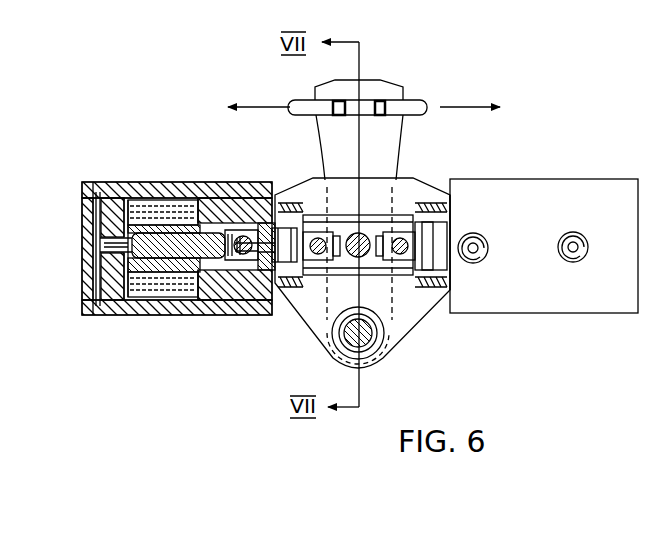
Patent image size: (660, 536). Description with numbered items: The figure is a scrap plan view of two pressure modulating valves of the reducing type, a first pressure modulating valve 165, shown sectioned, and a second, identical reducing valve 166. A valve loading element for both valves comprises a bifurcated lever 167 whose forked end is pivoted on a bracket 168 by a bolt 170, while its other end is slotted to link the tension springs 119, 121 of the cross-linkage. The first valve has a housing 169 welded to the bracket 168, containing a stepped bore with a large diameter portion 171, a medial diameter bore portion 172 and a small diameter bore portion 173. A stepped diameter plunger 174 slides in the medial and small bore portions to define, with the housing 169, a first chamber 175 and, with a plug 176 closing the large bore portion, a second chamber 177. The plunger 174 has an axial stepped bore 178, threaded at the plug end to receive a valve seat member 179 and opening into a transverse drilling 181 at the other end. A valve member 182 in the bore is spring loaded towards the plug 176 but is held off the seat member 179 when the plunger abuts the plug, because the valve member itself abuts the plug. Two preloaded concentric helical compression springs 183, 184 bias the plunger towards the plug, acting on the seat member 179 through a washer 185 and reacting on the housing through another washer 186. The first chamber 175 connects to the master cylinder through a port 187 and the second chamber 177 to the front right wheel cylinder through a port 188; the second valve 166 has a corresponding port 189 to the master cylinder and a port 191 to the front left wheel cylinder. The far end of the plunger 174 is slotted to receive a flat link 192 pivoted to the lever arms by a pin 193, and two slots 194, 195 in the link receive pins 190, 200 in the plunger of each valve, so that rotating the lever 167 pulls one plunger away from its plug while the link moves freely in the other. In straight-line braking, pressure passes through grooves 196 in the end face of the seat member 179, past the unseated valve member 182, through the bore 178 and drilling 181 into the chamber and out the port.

The tension spring 119 is at (422, 100).
The tension spring 121 is at (305, 101).
The first pressure modulating valve 165 is at (110, 320).
The second reducing valve 166 is at (586, 317).
The bifurcated lever 167 is at (400, 135).
The bracket 168 is at (408, 322).
The housing 169 is at (178, 300).
The bolt 170 is at (376, 356).
The large diameter bore portion 171 is at (142, 300).
The medial diameter bore portion 172 is at (238, 300).
The small diameter bore portion 173 is at (265, 300).
The stepped diameter plunger 174 is at (195, 300).
The first chamber 175 is at (255, 225).
The plug 176 is at (102, 316).
The second chamber 177 is at (180, 208).
The axial stepped bore 178 is at (222, 210).
The valve seat member 179 is at (100, 256).
The transverse drilling 181 is at (215, 300).
The valve member 182 is at (162, 228).
The helical compression spring 183 is at (142, 182).
The helical compression spring 184 is at (168, 300).
The washer 185 is at (120, 200).
The washer 186 is at (205, 215).
The port 187 is at (99, 240).
The port 188 is at (248, 300).
The port 189 is at (588, 247).
The pin 190 is at (322, 230).
The port 191 is at (489, 245).
The flat link 192 is at (388, 232).
The pin 193 is at (404, 265).
The slot 194 is at (336, 225).
The slot 195 is at (450, 198).
The grooves 196 is at (96, 219).
The pin 200 is at (370, 258).